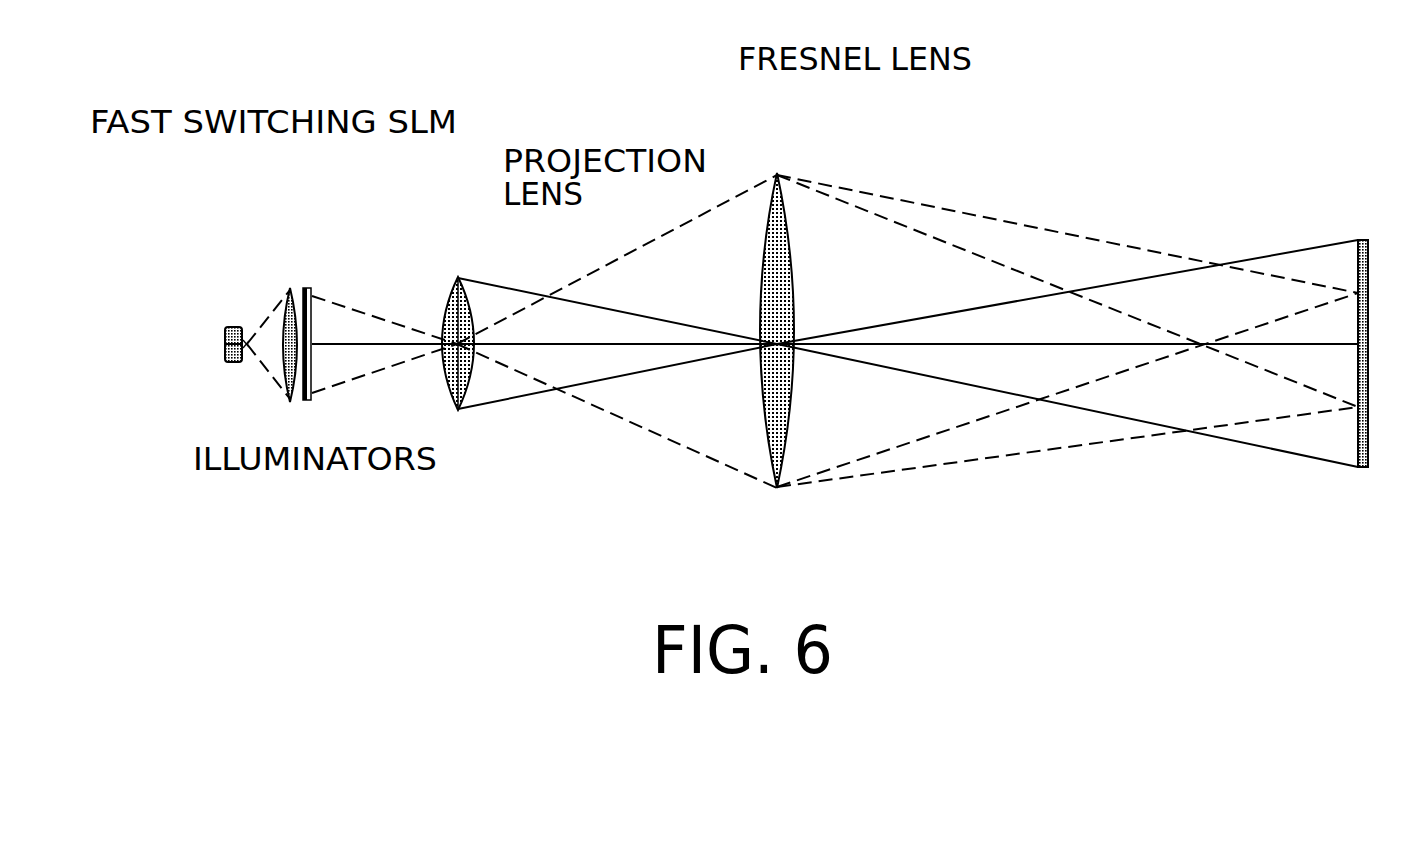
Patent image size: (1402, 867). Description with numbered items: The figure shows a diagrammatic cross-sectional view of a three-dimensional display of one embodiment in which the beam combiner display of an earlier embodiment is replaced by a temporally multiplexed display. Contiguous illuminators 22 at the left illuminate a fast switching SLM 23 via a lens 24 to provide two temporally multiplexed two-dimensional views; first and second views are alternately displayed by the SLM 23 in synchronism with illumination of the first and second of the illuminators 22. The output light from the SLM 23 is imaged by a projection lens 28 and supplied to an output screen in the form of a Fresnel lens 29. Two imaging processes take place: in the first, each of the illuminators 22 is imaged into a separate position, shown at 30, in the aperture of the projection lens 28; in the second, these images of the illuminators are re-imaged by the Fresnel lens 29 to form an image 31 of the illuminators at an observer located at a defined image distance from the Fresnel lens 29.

The illuminators 22 is at (237, 363).
The fast switching SLM 23 is at (309, 288).
The lens 24 is at (291, 288).
The projection lens 28 is at (459, 277).
The Fresnel lens 29 is at (777, 175).
The images of the illuminators 30 is at (458, 410).
The image of the illuminators 31 is at (1358, 240).